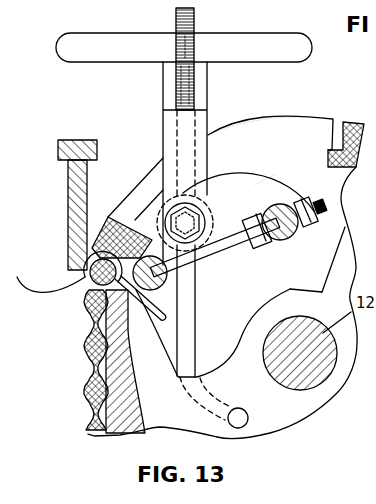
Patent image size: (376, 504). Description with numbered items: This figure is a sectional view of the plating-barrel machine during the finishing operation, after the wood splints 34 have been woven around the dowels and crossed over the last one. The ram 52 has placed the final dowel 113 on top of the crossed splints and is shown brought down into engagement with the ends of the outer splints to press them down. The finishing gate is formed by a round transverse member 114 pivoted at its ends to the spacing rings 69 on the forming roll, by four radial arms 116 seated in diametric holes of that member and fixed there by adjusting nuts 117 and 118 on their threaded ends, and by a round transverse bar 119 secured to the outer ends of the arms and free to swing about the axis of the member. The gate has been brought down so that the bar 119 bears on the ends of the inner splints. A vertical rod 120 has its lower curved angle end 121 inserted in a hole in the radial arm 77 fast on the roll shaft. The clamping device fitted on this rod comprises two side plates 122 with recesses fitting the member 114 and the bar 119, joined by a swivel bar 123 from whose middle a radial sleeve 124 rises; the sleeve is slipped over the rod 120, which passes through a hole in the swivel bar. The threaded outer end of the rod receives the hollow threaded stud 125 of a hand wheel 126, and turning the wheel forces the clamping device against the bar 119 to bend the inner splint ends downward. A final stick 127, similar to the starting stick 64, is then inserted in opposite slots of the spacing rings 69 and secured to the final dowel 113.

The wood splint 34 is at (33, 287).
The ram 52 is at (68, 194).
The starting stick 64 is at (351, 124).
The spacing ring 69 is at (263, 125).
The radial arm 77 is at (270, 406).
The final dowel 113 is at (90, 288).
The round transverse member 114 is at (282, 203).
The radial arm 116 is at (222, 250).
The adjusting nut 117 is at (313, 228).
The adjusting nut 118 is at (265, 249).
The round transverse bar 119 is at (167, 290).
The vertical rod 120 is at (195, 17).
The curved angle end 121 is at (200, 404).
The side plate 122 is at (255, 182).
The swivel bar 123 is at (203, 187).
The radial sleeve 124 is at (207, 131).
The hollow threaded stud 125 is at (163, 82).
The hand wheel 126 is at (145, 48).
The final stick 127 is at (98, 232).